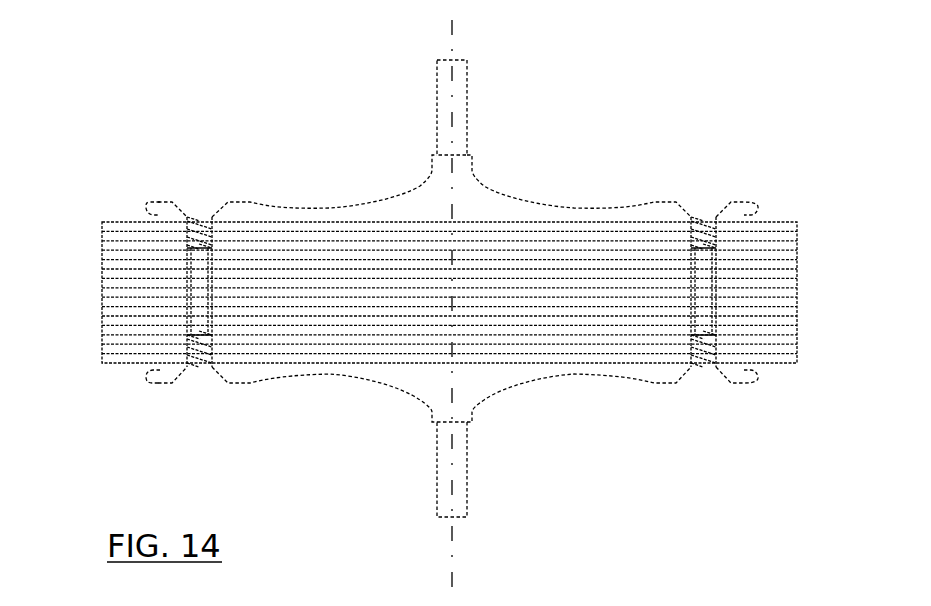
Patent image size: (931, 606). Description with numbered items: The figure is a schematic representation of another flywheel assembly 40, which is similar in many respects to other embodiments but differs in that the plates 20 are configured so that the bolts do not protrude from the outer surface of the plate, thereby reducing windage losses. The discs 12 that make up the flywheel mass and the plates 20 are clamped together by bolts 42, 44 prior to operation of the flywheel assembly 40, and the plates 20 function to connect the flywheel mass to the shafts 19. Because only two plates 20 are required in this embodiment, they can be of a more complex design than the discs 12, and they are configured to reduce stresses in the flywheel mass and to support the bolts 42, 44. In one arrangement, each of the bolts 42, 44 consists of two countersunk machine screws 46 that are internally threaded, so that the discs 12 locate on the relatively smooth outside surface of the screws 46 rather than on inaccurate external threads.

The discs 12 is at (78, 222).
The shafts 19 is at (437, 113).
The plates 20 is at (380, 212).
The flywheel assembly 40 is at (226, 96).
The bolt 42 is at (200, 178).
The bolt 44 is at (708, 176).
The countersunk machine screws 46 is at (192, 217).